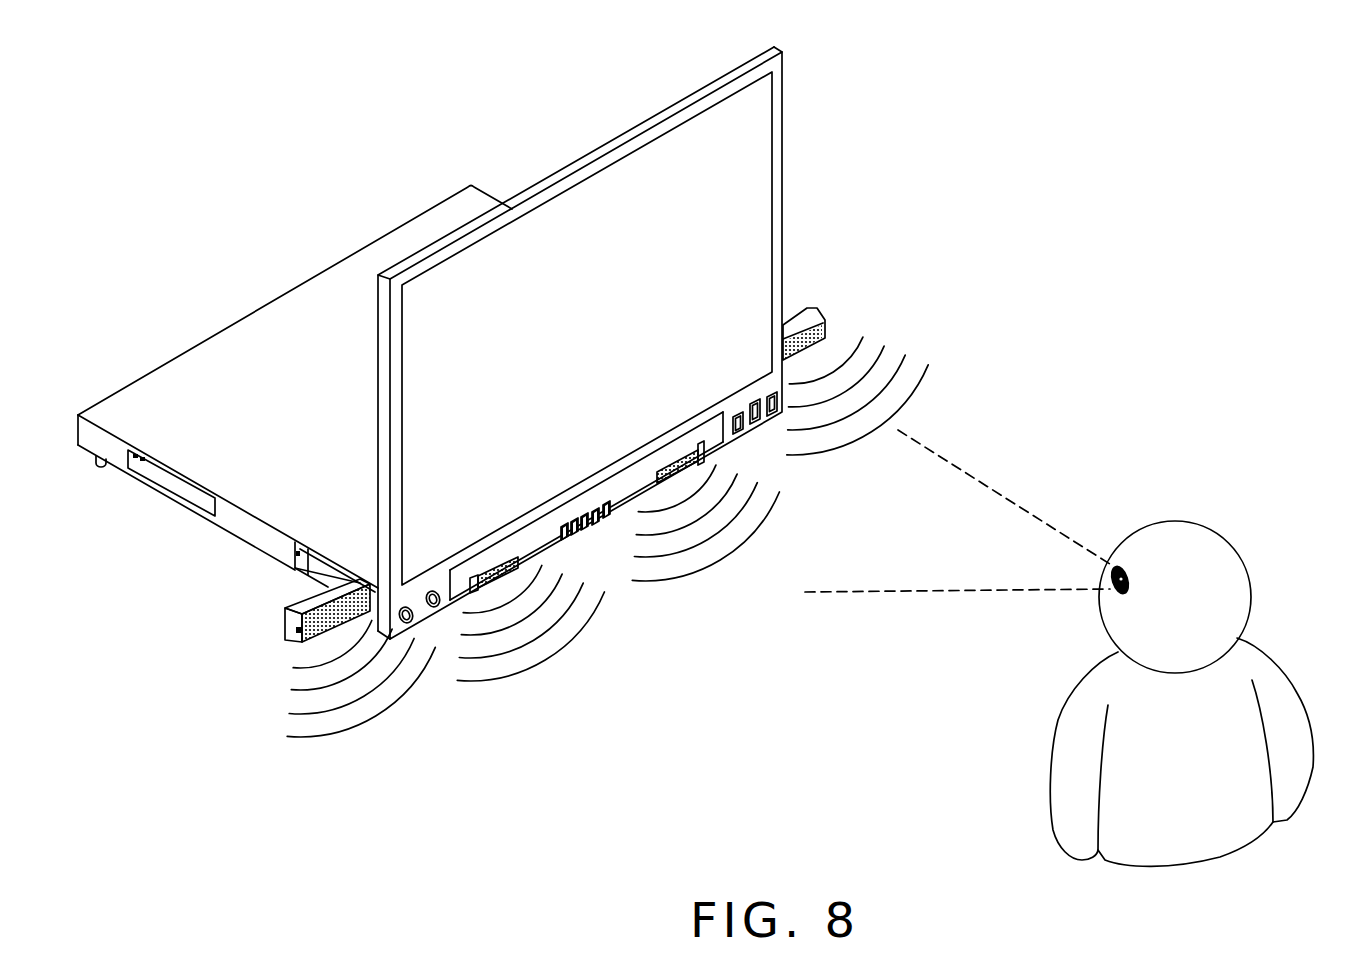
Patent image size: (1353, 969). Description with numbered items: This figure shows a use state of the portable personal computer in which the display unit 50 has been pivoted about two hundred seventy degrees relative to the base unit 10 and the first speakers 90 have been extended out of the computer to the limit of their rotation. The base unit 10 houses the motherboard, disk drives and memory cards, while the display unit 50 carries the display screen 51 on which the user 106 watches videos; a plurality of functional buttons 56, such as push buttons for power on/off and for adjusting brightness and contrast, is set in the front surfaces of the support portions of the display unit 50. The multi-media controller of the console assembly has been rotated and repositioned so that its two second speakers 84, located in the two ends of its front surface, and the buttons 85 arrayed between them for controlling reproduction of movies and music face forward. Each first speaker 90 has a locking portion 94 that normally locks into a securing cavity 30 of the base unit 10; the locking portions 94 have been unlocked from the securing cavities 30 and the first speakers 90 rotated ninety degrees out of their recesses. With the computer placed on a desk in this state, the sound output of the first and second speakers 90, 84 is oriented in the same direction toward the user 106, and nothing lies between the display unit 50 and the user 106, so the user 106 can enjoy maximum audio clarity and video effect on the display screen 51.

The base unit 10 is at (295, 313).
The securing cavity 30 is at (295, 552).
The display unit 50 is at (673, 123).
The display screen 51 is at (752, 132).
The functional buttons 56 is at (756, 399).
The second speakers 84 is at (700, 458).
The buttons 85 is at (578, 533).
The first speakers 90 is at (308, 605).
The locking portion 94 is at (300, 630).
The user 106 is at (1176, 560).